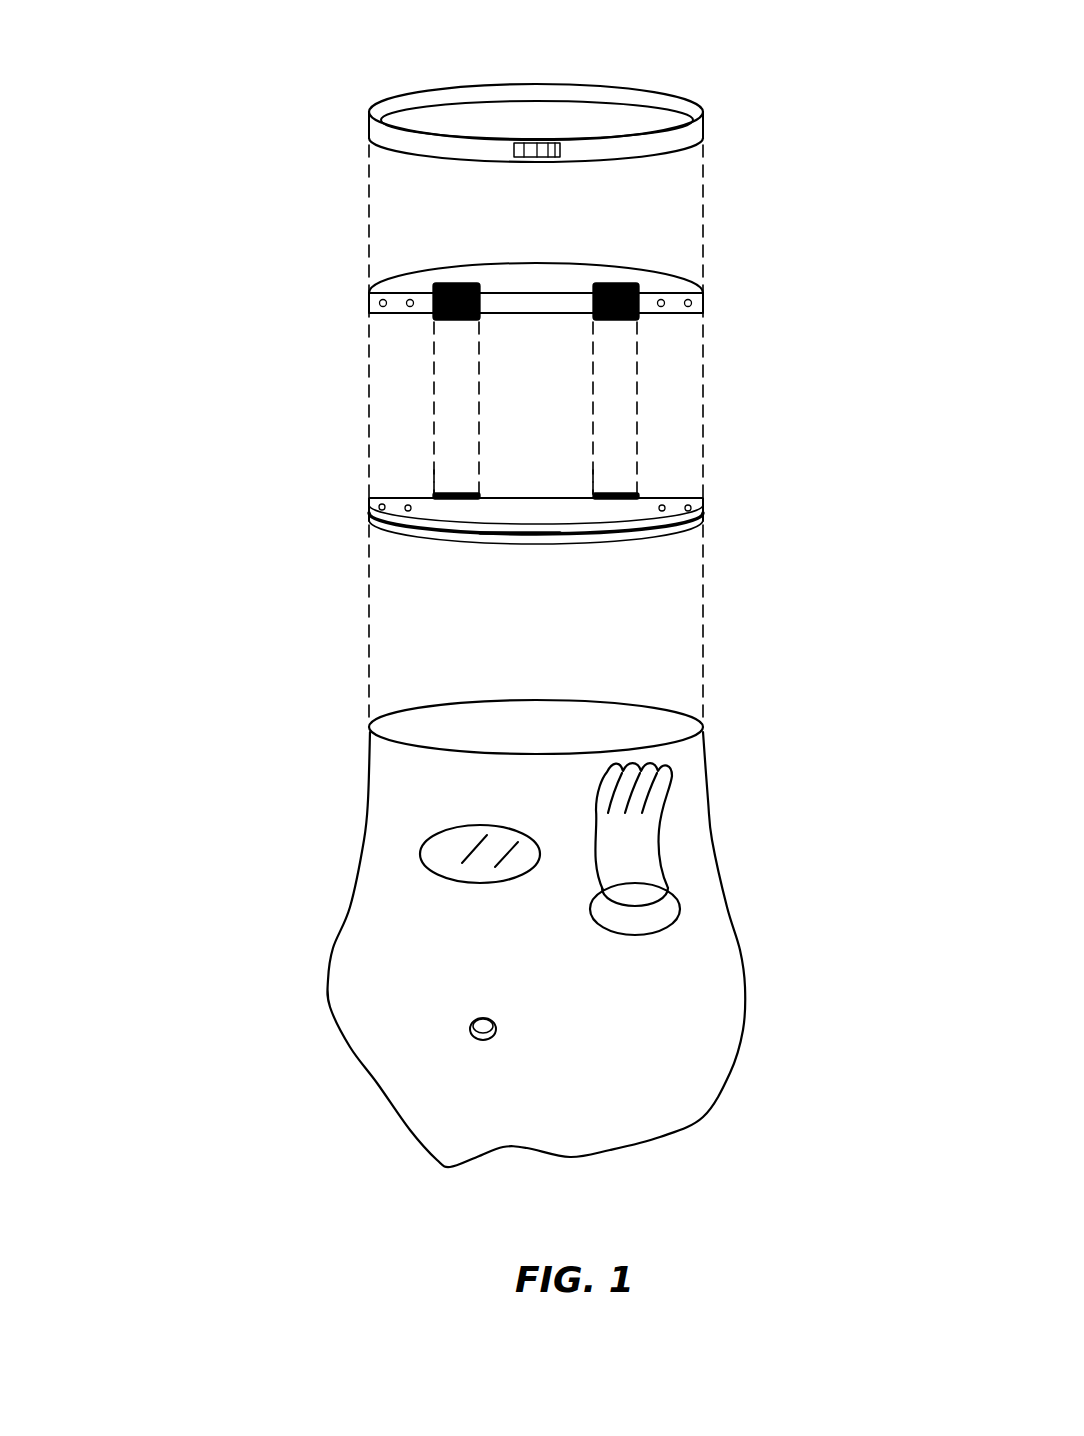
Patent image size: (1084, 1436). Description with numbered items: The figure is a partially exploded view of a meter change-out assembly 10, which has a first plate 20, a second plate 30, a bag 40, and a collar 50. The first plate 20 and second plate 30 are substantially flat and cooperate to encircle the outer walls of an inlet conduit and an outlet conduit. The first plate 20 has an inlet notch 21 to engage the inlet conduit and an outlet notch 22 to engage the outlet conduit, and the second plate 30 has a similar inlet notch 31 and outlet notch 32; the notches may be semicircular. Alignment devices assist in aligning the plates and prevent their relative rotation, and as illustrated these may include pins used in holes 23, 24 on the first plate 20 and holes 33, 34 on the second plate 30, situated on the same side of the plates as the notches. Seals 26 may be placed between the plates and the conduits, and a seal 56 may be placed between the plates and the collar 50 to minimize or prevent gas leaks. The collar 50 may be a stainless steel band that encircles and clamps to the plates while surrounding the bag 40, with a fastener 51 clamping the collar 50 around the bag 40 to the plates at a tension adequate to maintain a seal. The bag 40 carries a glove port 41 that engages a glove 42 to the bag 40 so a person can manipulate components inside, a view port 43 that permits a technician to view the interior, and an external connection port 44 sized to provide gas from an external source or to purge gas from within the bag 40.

The meter change-out assembly 10 is at (188, 113).
The collar 50 is at (662, 93).
The fastener 51 is at (527, 158).
The first plate 20 is at (674, 279).
The inlet notch 21 is at (431, 292).
The outlet notch 22 is at (585, 292).
The seals 26 is at (452, 284).
The hole 24 is at (383, 309).
The hole 23 is at (410, 309).
The second plate 30 is at (653, 498).
The inlet notch 31 is at (432, 497).
The outlet notch 32 is at (592, 497).
The hole 33 is at (380, 512).
The hole 34 is at (405, 512).
The seal 56 is at (517, 538).
The bag 40 is at (722, 825).
The glove port 41 is at (677, 902).
The glove 42 is at (660, 807).
The view port 43 is at (457, 827).
The external connection port 44 is at (472, 1022).